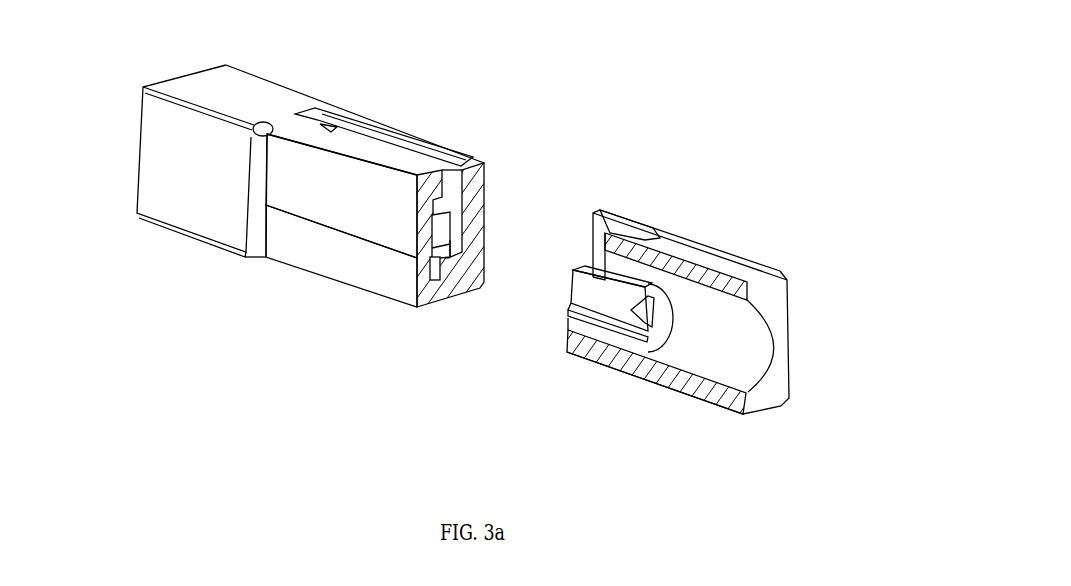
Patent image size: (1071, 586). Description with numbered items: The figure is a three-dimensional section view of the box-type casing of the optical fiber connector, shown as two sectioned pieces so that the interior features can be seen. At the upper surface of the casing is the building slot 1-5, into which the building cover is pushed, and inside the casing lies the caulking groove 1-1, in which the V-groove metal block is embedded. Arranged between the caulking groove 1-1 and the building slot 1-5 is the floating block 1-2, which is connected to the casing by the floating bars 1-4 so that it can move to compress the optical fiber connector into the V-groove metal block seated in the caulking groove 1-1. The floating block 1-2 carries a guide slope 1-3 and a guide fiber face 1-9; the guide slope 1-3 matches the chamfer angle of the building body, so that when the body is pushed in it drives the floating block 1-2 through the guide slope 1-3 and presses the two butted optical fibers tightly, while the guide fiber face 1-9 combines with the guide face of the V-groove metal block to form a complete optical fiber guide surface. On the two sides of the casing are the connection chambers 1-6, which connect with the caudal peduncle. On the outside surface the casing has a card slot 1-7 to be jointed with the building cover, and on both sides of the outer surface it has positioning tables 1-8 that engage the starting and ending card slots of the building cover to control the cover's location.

The caulking groove 1-1 is at (435, 283).
The floating block 1-2 is at (414, 261).
The guide slope 1-3 is at (451, 226).
The floating bars 1-4 is at (449, 260).
The building slot 1-5 is at (462, 200).
The connection chamber 1-6 is at (135, 130).
The card slot 1-7 is at (292, 240).
The positioning table 1-8 is at (268, 122).
The guide fiber face 1-9 is at (650, 309).